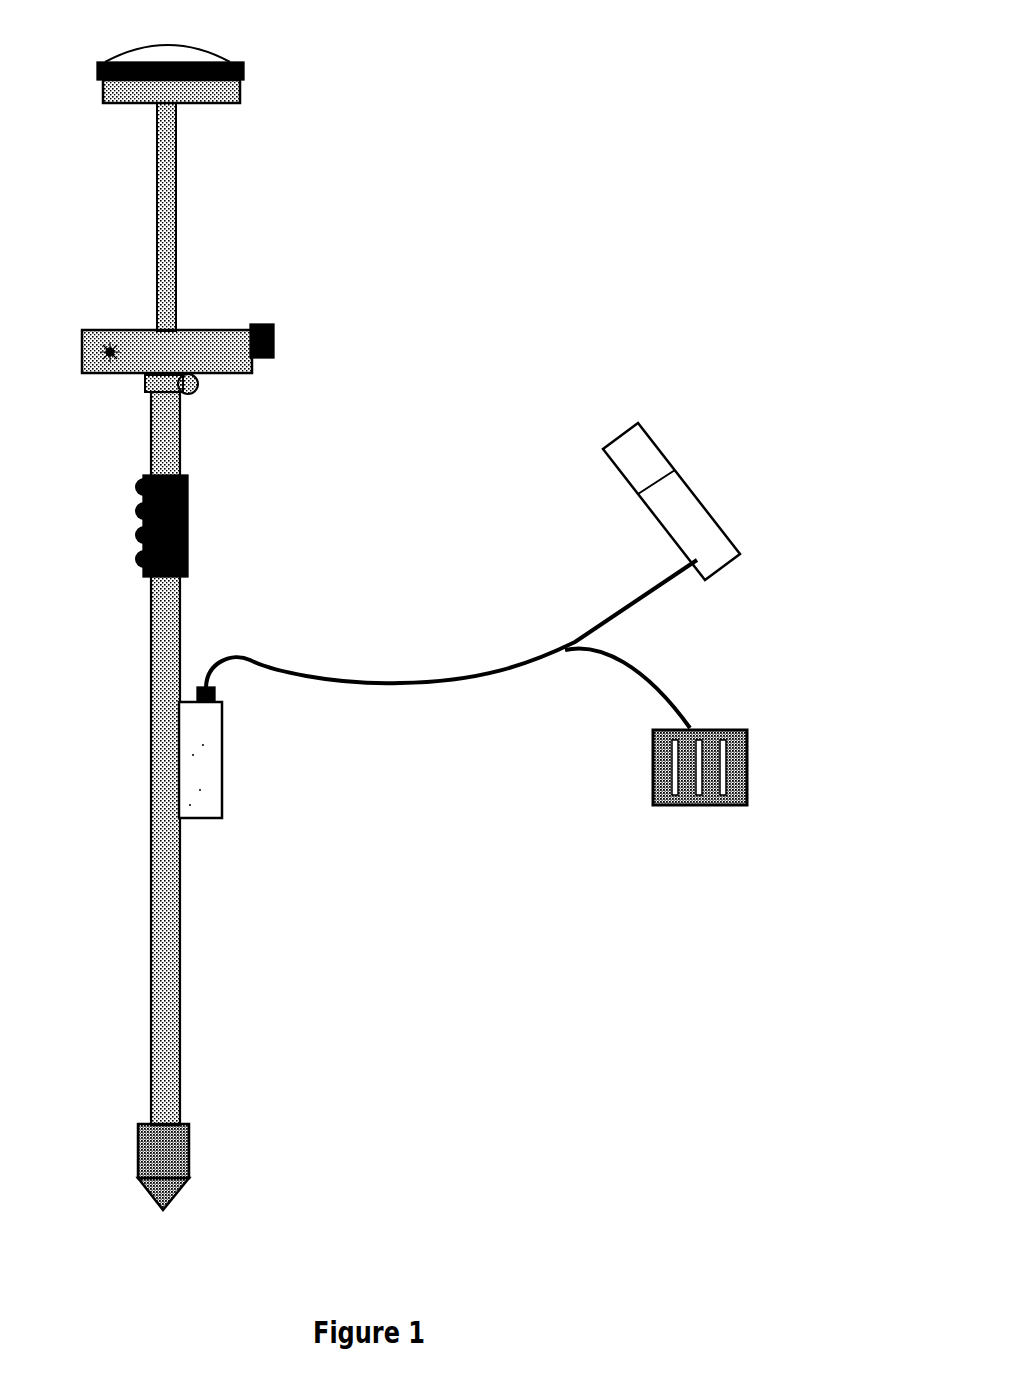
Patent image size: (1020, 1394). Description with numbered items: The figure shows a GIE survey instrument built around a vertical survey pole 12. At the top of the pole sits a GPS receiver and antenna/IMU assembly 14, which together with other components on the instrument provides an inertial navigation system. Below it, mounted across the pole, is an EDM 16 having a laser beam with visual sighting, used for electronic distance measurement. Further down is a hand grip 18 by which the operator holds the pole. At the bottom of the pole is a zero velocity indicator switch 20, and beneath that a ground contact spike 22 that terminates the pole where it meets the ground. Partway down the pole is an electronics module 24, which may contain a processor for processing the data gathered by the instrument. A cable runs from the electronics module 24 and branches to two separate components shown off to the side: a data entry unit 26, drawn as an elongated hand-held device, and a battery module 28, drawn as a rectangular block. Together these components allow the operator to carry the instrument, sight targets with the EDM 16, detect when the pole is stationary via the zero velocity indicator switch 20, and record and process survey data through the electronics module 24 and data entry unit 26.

The survey pole 12 is at (178, 199).
The antenna/IMU assembly 14 is at (247, 64).
The EDM 16 is at (290, 347).
The hand grip 18 is at (190, 530).
The zero velocity indicator switch 20 is at (214, 1154).
The ground contact spike 22 is at (174, 1222).
The electronics module 24 is at (228, 755).
The data entry unit 26 is at (737, 527).
The battery module 28 is at (754, 781).